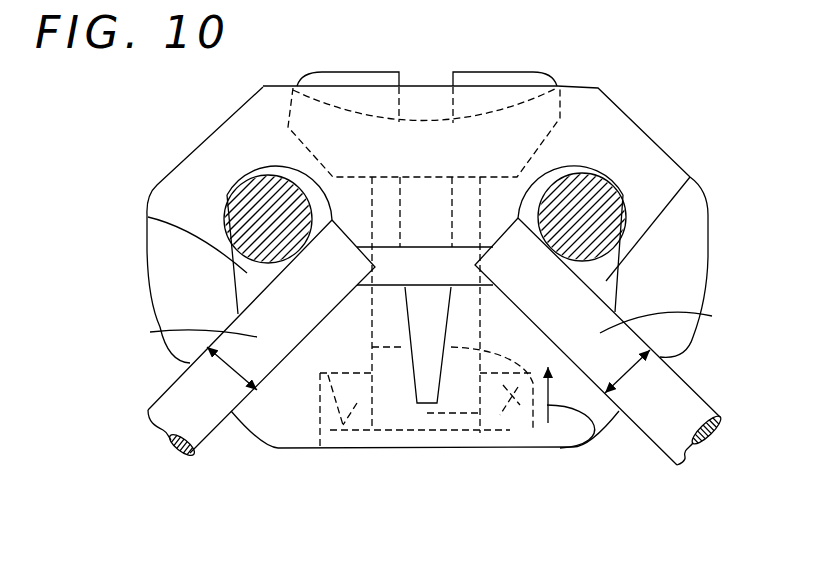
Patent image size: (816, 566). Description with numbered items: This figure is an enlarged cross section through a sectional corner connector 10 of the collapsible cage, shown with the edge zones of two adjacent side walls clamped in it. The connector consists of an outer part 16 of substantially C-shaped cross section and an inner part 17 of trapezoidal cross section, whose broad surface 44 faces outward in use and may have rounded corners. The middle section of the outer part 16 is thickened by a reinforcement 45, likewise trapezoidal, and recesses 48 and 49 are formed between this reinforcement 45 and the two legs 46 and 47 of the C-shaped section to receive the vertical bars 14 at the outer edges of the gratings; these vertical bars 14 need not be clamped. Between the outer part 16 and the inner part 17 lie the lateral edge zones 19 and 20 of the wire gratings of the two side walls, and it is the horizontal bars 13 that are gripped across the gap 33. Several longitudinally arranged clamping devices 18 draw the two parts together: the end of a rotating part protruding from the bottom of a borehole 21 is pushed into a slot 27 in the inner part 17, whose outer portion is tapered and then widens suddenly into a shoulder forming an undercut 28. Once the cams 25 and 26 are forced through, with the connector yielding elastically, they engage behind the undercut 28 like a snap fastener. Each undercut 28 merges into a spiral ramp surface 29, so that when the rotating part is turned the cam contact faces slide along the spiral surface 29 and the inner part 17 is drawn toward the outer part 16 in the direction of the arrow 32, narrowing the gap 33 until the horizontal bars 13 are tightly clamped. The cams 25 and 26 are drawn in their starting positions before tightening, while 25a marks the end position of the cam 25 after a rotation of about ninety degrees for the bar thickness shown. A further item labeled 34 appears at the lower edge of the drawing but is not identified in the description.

The sectional corner connector 10 is at (432, 489).
The horizontal bars 13 is at (300, 295).
The vertical bars 14 is at (258, 213).
The outer part 16 is at (648, 126).
The inner part 17 is at (279, 450).
The clamping devices 18 is at (538, 67).
The lateral edge zone 19 is at (150, 332).
The lateral edge zone 20 is at (629, 249).
The borehole 21 is at (313, 152).
The cam 25 is at (340, 400).
The end position of rotation of cam 25a is at (400, 385).
The cam 26 is at (515, 385).
The slot 27 is at (410, 300).
The undercut 28 is at (385, 385).
The spiral ramp surface 29 is at (553, 448).
The arrow 32 is at (600, 437).
The gap 33 is at (229, 369).
The lower member 34 is at (165, 559).
The broad surface 44 is at (410, 449).
The reinforcement 45 is at (500, 213).
The leg 46 is at (677, 257).
The leg 47 is at (183, 278).
The recess 48 is at (690, 177).
The recess 49 is at (148, 217).